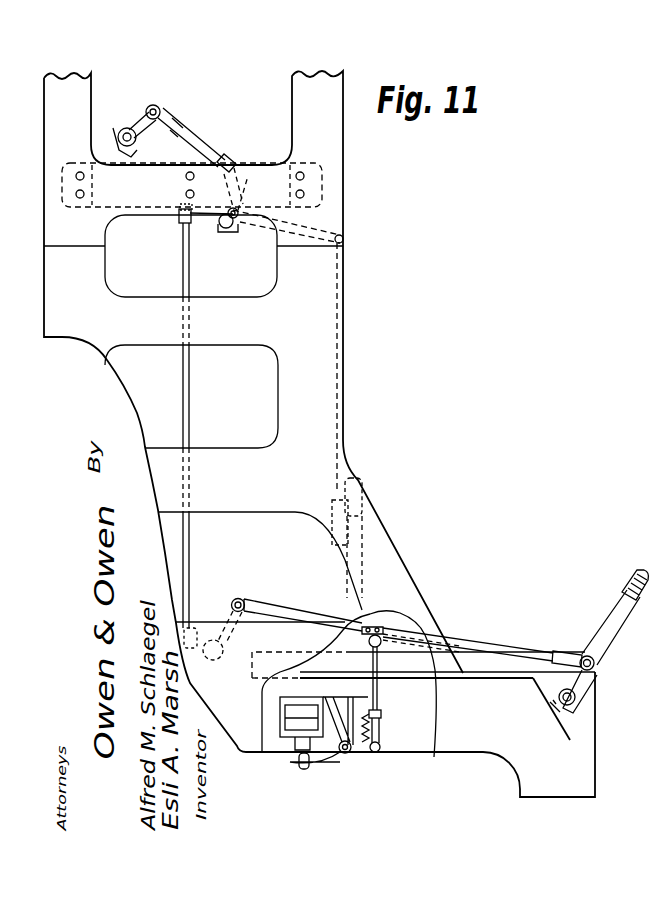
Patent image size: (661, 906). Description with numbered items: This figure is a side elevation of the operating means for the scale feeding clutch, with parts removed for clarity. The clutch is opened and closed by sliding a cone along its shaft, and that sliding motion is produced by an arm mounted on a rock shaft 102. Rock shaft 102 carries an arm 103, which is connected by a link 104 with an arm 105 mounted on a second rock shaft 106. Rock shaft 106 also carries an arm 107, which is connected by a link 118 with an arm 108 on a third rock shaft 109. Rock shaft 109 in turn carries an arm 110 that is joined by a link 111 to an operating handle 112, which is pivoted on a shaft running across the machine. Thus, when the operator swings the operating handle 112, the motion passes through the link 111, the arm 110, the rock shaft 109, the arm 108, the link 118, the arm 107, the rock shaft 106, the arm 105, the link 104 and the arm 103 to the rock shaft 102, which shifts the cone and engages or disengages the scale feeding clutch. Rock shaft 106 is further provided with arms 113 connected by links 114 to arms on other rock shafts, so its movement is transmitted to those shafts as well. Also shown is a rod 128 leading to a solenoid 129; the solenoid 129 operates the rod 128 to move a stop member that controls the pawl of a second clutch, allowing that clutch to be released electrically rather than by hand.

The rock shaft 102 is at (130, 128).
The arm 103 is at (146, 130).
The link 104 is at (196, 136).
The arm 105 is at (240, 195).
The rock shaft 106 is at (236, 209).
The arm 107 is at (194, 224).
The arm 108 is at (193, 652).
The rock shaft 109 is at (217, 653).
The arm 110 is at (238, 598).
The link 111 is at (290, 614).
The operating handle 112 is at (602, 640).
The arms 113 is at (257, 228).
The links 114 is at (345, 348).
The link 118 is at (190, 408).
The rod 128 is at (379, 692).
The solenoid 129 is at (298, 722).